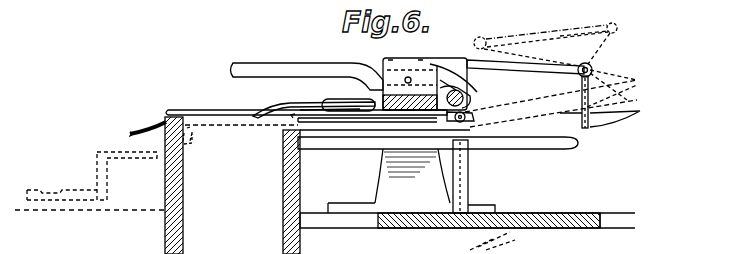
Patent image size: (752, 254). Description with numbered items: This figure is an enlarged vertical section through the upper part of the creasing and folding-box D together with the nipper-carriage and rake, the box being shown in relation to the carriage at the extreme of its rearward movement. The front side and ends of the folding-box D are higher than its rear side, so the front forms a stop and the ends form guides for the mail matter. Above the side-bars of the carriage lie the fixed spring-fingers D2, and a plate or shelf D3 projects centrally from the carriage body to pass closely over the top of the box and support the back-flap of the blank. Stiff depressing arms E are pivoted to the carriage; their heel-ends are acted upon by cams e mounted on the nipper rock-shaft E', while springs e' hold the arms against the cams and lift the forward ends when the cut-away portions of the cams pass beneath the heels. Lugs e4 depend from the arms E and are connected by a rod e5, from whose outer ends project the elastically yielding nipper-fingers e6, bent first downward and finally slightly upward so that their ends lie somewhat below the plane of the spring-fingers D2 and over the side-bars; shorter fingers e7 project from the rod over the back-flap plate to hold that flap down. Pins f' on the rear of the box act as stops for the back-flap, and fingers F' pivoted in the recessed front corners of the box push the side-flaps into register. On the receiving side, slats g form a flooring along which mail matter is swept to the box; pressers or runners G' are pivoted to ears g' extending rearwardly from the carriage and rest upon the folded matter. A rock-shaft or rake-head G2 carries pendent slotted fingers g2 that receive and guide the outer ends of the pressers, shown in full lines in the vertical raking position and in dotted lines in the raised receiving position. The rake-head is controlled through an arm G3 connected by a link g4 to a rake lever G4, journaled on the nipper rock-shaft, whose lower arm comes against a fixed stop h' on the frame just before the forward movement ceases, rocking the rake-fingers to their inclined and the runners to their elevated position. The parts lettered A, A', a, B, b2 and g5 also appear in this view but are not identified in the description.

The base plate A is at (467, 205).
The base extension A' is at (708, 17).
The lever a is at (130, 134).
The pedestal B is at (383, 197).
The pin b2 is at (462, 24).
The folding-box D is at (190, 150).
The fixed spring-fingers D2 is at (218, 96).
The plate or shelf D3 is at (350, 120).
The depressing arms E is at (307, 64).
The nipper rock-shaft E' is at (467, 108).
The cams e is at (450, 74).
The springs e' is at (452, 57).
The lugs e4 is at (375, 88).
The rod e5 is at (379, 124).
The nipper-fingers e6 is at (275, 112).
The shorter fingers e7 is at (328, 107).
The fingers F' is at (503, 243).
The pins f' is at (266, 137).
The pressers or runners G' is at (533, 93).
The rake-head G2 is at (593, 69).
The arm G3 is at (618, 29).
The rake lever G4 is at (483, 33).
The slats g is at (438, 159).
The ears g' is at (472, 167).
The rake-fingers g2 is at (595, 102).
The link g4 is at (534, 42).
The link g5 is at (586, 40).
The fixed stop h' is at (90, 181).